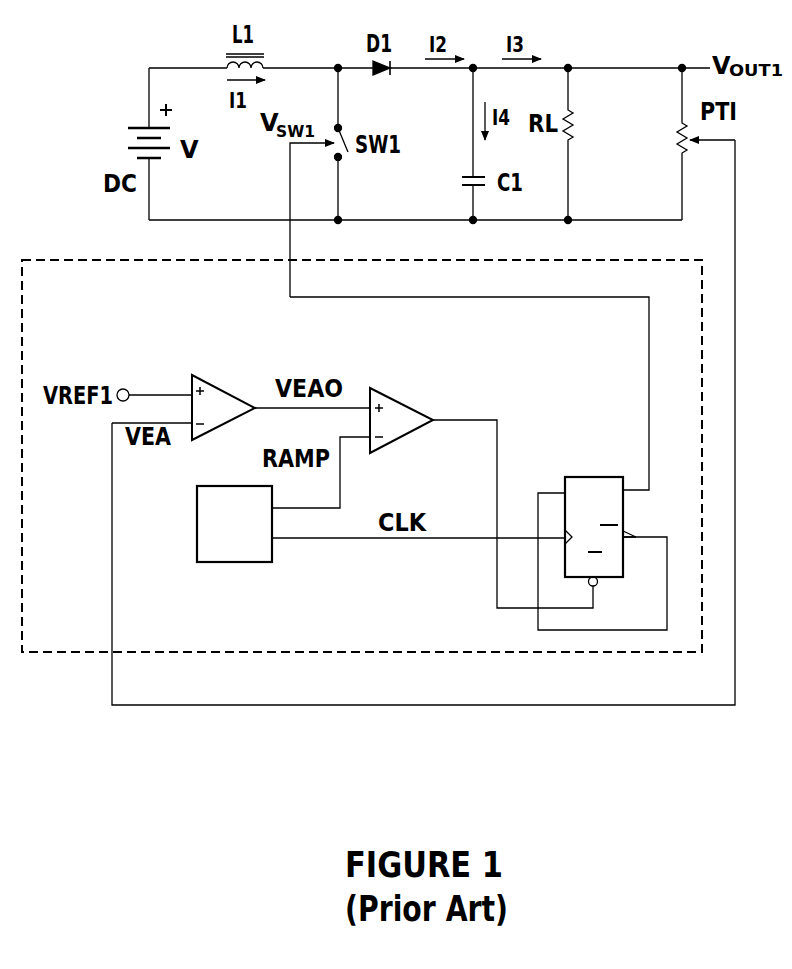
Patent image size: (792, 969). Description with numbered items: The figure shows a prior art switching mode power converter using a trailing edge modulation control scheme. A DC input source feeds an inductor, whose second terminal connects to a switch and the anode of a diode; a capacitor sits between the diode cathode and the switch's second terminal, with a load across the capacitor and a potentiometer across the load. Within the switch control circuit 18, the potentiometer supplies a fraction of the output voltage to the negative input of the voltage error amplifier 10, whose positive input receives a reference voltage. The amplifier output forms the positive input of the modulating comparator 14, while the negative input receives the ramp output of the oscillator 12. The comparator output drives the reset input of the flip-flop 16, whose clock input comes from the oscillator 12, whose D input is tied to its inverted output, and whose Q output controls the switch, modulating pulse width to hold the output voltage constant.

The voltage error amplifier 10 is at (224, 378).
The oscillator 12 is at (186, 522).
The modulating comparator 14 is at (400, 447).
The flip-flop 16 is at (592, 470).
The switch control circuit 18 is at (68, 252).